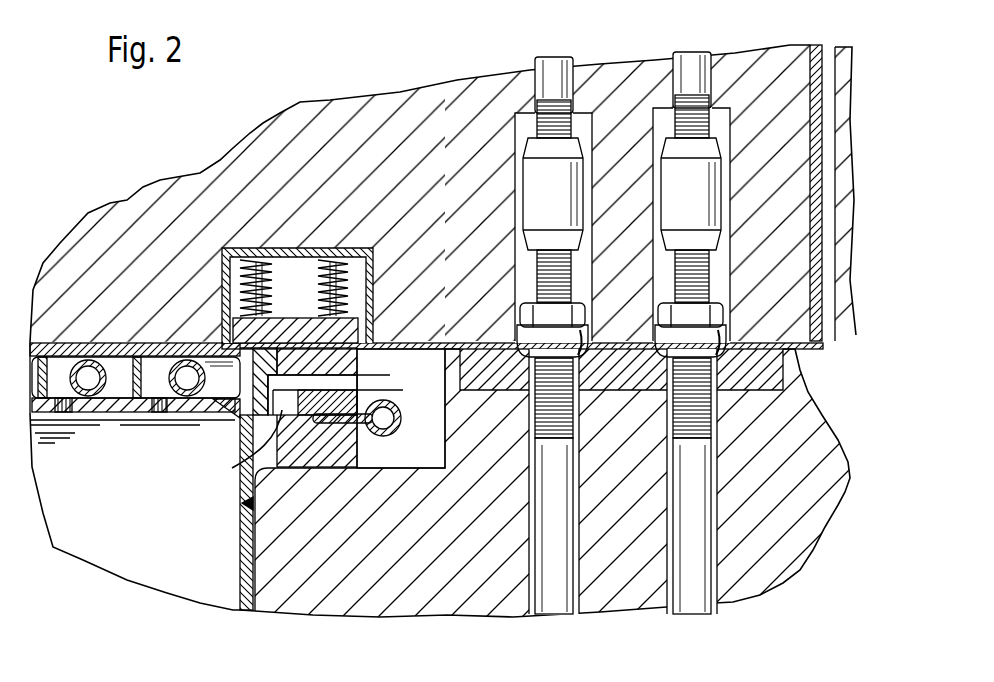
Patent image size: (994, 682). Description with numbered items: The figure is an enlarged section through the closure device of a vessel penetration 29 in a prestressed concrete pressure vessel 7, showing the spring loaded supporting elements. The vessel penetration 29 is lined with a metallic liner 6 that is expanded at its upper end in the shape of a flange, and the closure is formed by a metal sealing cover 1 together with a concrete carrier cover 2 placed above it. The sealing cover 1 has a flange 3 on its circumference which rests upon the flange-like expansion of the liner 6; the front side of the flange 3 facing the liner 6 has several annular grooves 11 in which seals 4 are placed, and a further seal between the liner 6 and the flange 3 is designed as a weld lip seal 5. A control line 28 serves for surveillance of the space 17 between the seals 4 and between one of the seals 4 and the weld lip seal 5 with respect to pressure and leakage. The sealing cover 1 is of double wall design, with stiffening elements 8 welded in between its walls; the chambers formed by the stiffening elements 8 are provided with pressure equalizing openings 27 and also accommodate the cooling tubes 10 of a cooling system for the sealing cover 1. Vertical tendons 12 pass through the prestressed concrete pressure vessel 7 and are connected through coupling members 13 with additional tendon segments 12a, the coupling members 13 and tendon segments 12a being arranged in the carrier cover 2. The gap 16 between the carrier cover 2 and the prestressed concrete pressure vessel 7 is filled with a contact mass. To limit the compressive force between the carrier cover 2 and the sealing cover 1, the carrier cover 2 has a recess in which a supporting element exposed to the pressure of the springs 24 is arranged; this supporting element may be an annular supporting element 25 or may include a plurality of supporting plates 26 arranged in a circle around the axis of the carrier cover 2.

The sealing cover 1 is at (72, 351).
The carrier cover 2 is at (427, 107).
The flange 3 is at (243, 404).
The seals 4 is at (243, 410).
The weld lip seal 5 is at (400, 428).
The metallic liner 6 is at (250, 577).
The prestressed concrete pressure vessel 7 is at (432, 600).
The stiffening elements 8 is at (132, 381).
The cooling tubes 10 is at (180, 386).
The annular grooves 11 is at (242, 503).
The vertical tendons 12 is at (551, 600).
The additional tendon segments 12a is at (548, 75).
The coupling members 13 is at (672, 162).
The gap 16 is at (836, 425).
The space 17 is at (232, 468).
The springs 24 is at (320, 268).
The annular supporting element 25 is at (243, 312).
The supporting plates 26 is at (295, 330).
The pressure equalizing openings 27 is at (63, 407).
The control line 28 is at (403, 389).
The vessel penetration 29 is at (98, 545).